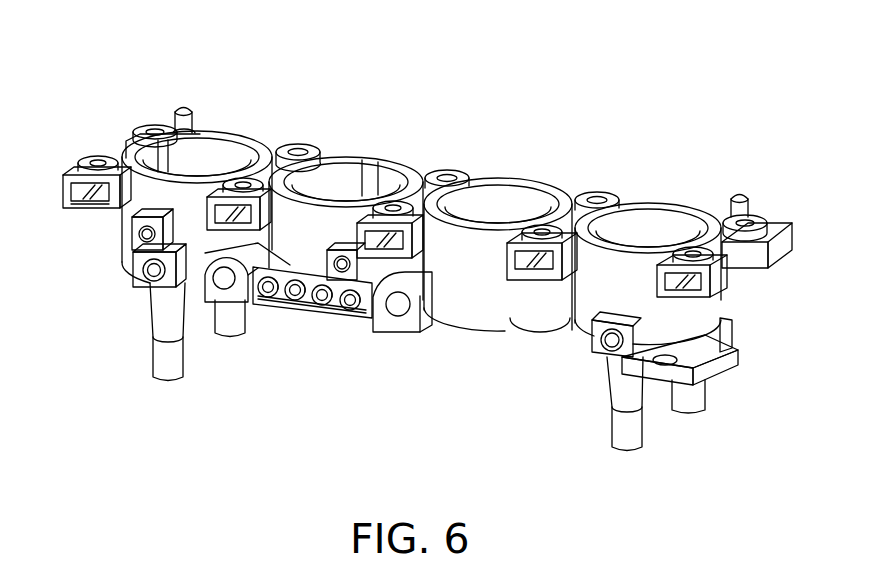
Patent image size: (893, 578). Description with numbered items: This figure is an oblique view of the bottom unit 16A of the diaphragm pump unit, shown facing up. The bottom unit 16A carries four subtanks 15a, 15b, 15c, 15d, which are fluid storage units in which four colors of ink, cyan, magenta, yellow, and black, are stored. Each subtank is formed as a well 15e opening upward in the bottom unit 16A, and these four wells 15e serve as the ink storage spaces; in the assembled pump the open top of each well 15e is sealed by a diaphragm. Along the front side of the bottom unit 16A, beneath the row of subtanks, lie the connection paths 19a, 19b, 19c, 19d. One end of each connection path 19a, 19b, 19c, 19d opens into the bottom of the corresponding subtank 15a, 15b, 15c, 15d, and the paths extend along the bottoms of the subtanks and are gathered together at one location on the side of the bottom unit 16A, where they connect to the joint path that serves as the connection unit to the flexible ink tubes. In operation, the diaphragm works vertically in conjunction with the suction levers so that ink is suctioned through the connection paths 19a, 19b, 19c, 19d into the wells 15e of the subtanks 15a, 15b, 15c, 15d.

The bottom unit 16A is at (112, 100).
The subtank 15a is at (208, 128).
The subtank 15b is at (370, 145).
The subtank 15c is at (490, 172).
The subtank 15d is at (684, 198).
The well 15e is at (343, 177).
The connection path 19a is at (263, 303).
The connection path 19b is at (290, 307).
The connection path 19c is at (320, 310).
The connection path 19d is at (350, 302).